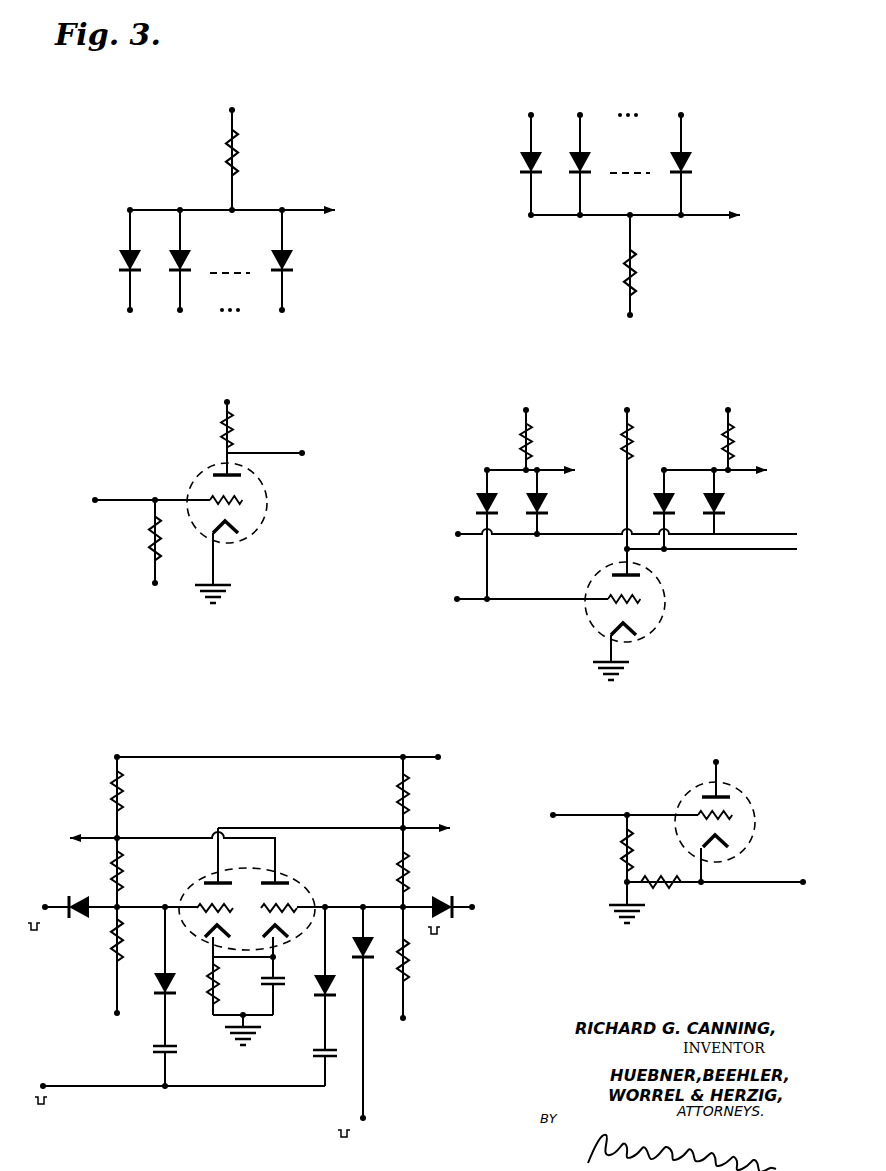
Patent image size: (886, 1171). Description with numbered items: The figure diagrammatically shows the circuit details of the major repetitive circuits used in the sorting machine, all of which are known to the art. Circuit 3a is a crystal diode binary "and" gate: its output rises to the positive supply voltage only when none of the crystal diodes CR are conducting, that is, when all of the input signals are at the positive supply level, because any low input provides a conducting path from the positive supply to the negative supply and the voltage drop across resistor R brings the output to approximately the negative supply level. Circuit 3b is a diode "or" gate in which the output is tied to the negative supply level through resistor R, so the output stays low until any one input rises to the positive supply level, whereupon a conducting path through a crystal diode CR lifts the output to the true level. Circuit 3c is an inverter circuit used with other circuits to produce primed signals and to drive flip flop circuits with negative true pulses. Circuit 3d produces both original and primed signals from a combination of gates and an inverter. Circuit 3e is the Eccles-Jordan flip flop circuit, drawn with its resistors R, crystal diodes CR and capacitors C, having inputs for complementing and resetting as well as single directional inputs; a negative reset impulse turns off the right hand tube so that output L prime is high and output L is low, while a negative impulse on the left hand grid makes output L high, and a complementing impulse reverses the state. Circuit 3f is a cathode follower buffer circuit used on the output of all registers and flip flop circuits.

The crystal diode binary "and" gate circuit 3a is at (222, 197).
The diode "or" gate circuit 3b is at (621, 201).
The inverter circuit 3c is at (201, 479).
The original and primed signal generating circuit 3d is at (598, 519).
The Eccles-Jordan flip flop circuit 3e is at (258, 923).
The cathode follower buffer circuit 3f is at (668, 817).
The resistor R is at (431, 566).
The crystal diode CR is at (393, 582).
The capacitor C is at (245, 1006).